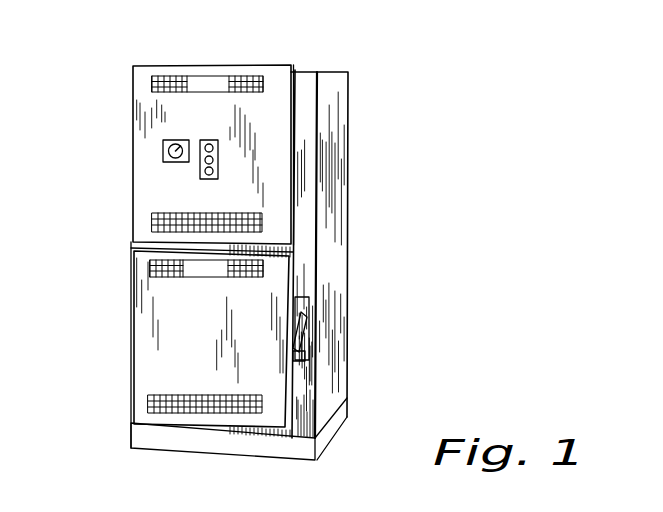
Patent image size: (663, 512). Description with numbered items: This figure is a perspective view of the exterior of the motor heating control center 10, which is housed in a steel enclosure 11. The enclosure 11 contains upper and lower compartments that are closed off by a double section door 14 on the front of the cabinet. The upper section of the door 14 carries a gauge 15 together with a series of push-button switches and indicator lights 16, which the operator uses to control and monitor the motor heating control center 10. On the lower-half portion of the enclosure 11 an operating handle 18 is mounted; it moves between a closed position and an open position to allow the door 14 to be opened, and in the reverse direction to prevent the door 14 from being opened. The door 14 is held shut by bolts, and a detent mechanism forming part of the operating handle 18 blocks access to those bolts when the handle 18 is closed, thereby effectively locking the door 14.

The motor heating control center 10 is at (232, 239).
The steel enclosure 11 is at (347, 170).
The double section door 14 is at (168, 155).
The gauge 15 is at (176, 160).
The series of push-button switches and indicator lights 16 is at (202, 176).
The operating handle 18 is at (305, 345).